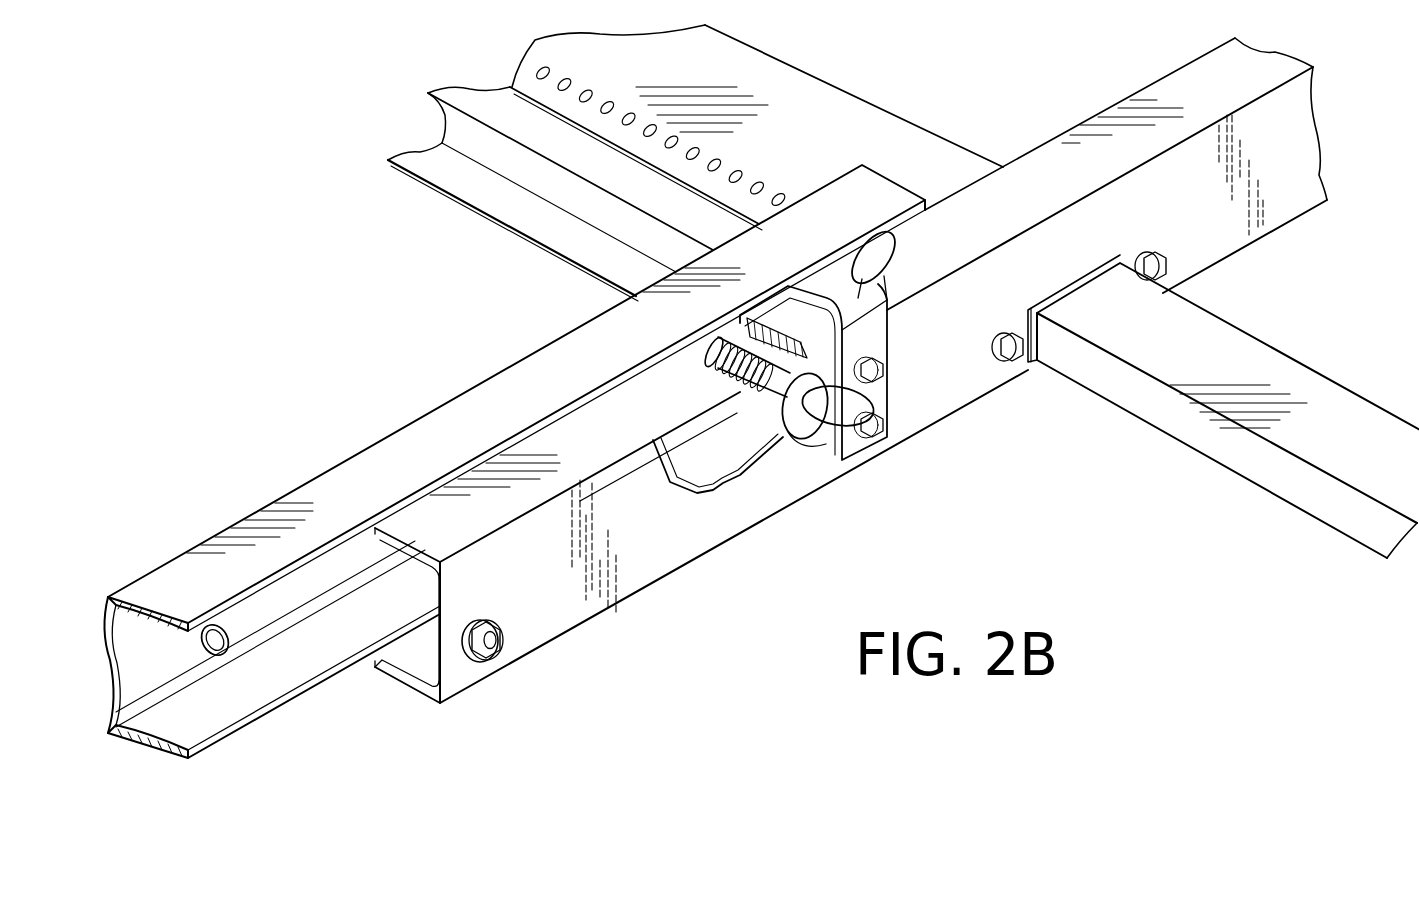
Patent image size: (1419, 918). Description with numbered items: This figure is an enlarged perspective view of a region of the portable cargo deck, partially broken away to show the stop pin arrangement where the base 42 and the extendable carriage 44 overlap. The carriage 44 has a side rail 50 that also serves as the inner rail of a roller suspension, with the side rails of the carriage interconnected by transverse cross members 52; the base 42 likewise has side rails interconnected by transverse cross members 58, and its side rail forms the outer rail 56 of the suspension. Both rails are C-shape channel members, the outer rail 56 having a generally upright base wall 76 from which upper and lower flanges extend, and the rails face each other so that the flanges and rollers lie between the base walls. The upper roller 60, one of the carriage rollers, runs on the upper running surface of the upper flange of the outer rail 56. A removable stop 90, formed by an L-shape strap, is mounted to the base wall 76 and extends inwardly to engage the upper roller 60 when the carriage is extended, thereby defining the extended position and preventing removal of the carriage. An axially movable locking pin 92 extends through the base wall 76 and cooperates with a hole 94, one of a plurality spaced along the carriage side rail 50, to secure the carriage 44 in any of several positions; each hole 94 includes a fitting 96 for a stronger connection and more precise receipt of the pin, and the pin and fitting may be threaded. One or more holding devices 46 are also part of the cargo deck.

The base 42 is at (851, 370).
The extendable carriage 44 is at (440, 195).
The holding device 46 is at (1317, 373).
The side rail 50 is at (350, 455).
The transverse cross member 52 is at (500, 225).
The outer rail 56 is at (650, 588).
The transverse cross member 58 is at (780, 60).
The upper roller 60 is at (896, 262).
The base wall 76 is at (705, 538).
The removable stop 90 is at (889, 333).
The locking pin 92 is at (822, 447).
The hole 94 is at (212, 624).
The fitting 96 is at (202, 650).